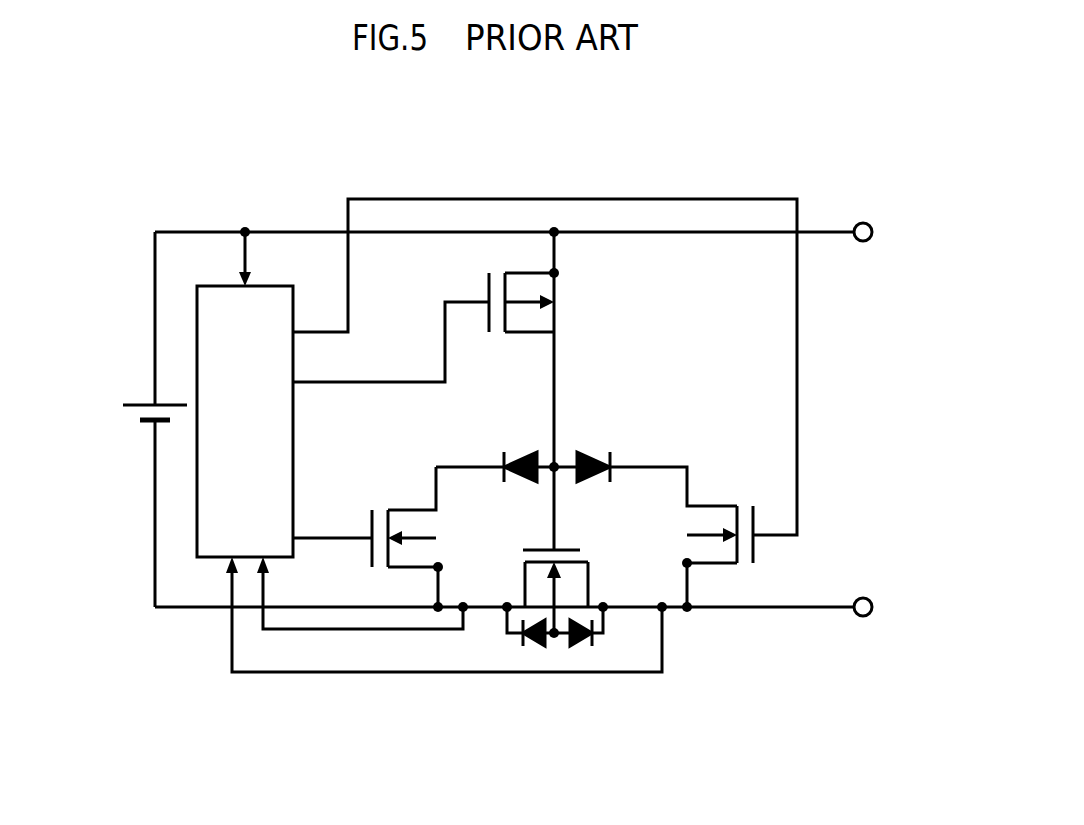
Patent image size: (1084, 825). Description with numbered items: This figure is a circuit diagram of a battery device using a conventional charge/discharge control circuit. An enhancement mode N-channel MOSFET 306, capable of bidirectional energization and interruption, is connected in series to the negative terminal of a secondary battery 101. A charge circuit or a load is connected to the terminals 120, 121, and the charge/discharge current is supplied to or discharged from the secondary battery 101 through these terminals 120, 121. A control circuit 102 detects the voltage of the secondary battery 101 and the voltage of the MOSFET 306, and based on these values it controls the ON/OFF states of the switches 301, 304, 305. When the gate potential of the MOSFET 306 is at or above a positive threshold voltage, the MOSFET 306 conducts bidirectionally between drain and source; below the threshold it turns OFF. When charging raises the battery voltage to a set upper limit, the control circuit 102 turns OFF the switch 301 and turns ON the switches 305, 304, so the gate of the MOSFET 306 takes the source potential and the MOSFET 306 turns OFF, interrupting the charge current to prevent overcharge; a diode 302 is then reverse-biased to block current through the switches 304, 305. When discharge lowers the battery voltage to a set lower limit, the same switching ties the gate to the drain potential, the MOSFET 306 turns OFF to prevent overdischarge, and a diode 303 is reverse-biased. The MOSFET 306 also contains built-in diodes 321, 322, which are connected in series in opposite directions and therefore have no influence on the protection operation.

The secondary battery 101 is at (130, 420).
The control circuit 102 is at (208, 560).
The terminal 120 is at (864, 243).
The terminal 121 is at (873, 590).
The switch 301 is at (556, 306).
The diode 302 is at (500, 456).
The diode 303 is at (613, 458).
The switch 304 is at (388, 510).
The switch 305 is at (722, 505).
The enhancement mode N-channel MOSFET 306 is at (523, 570).
The built-in diode 321 is at (530, 646).
The built-in diode 322 is at (577, 646).